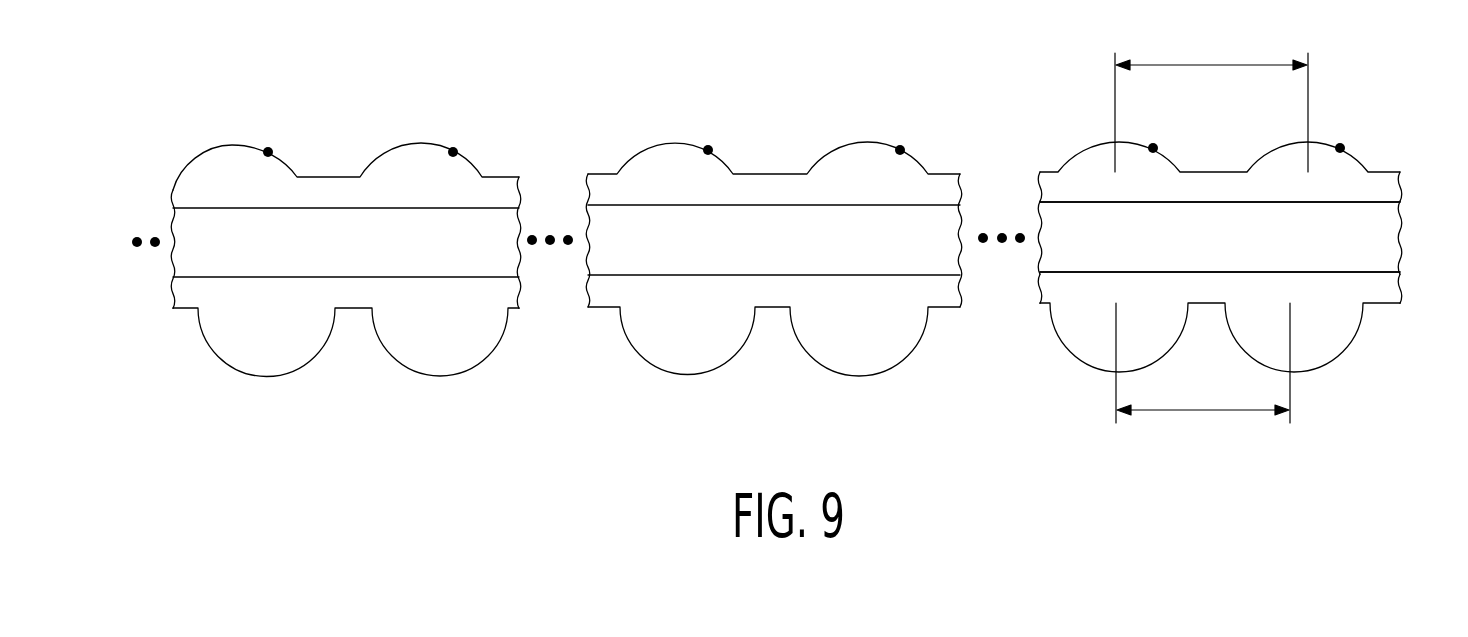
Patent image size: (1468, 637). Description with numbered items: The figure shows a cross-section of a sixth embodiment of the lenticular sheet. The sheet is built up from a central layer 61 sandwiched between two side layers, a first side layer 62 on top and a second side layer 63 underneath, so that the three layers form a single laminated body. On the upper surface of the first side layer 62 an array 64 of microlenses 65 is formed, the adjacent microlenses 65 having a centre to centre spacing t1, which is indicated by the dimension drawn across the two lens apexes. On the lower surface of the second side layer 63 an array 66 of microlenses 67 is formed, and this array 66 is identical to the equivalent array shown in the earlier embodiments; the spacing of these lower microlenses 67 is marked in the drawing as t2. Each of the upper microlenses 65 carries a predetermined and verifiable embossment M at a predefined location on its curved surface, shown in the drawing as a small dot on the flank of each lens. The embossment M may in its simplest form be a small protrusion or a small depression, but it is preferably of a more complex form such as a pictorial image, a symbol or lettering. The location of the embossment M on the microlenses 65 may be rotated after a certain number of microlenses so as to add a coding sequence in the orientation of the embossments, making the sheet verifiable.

The central layer 61 is at (1357, 240).
The first side layer 62 is at (1370, 183).
The second side layer 63 is at (1357, 285).
The array of microlenses 64 is at (1383, 170).
The microlens 65 is at (675, 142).
The array of microlenses 66 is at (1383, 307).
The microlens 67 is at (635, 357).
The embossment M is at (268, 152).
The centre to centre spacing t1 is at (1211, 103).
The lower lens pitch t2 is at (1203, 363).